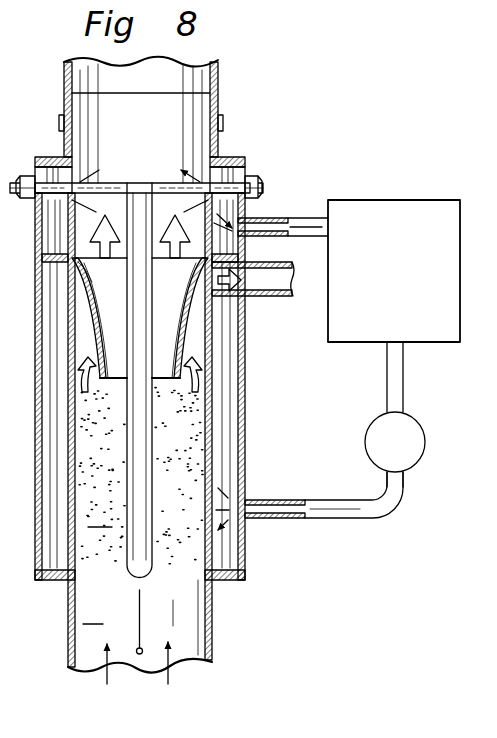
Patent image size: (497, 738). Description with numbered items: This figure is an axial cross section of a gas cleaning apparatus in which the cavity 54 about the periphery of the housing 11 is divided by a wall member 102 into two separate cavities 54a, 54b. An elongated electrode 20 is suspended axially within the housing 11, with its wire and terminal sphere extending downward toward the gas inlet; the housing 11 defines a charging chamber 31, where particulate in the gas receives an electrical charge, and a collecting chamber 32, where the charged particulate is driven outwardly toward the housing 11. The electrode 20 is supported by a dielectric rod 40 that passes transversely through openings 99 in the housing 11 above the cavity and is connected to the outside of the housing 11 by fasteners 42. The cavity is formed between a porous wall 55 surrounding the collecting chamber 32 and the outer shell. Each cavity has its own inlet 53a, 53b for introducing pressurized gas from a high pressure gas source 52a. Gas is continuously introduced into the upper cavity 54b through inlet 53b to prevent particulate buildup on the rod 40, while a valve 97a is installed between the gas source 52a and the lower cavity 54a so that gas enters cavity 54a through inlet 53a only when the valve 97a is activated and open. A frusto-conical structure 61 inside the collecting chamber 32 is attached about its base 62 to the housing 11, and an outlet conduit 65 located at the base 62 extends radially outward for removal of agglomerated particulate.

The housing 11 is at (66, 642).
The elongated electrode 20 is at (126, 446).
The charging chamber 31 is at (125, 645).
The collecting chamber 32 is at (141, 476).
The dielectric rod 40 is at (122, 184).
The fasteners 42 is at (22, 174).
The high pressure gas source 52a is at (400, 213).
The inlet 53a is at (248, 505).
The inlet 53b is at (261, 221).
The cavity 54 is at (52, 418).
The cavity 54a is at (47, 447).
The cavity 54b is at (50, 235).
The porous wall 55 is at (70, 388).
The frusto-conical structure 61 is at (90, 324).
The base 62 is at (75, 268).
The outlet conduit 65 is at (270, 298).
The valve 97a is at (377, 433).
The openings 99 is at (77, 184).
The wall member 102 is at (54, 263).